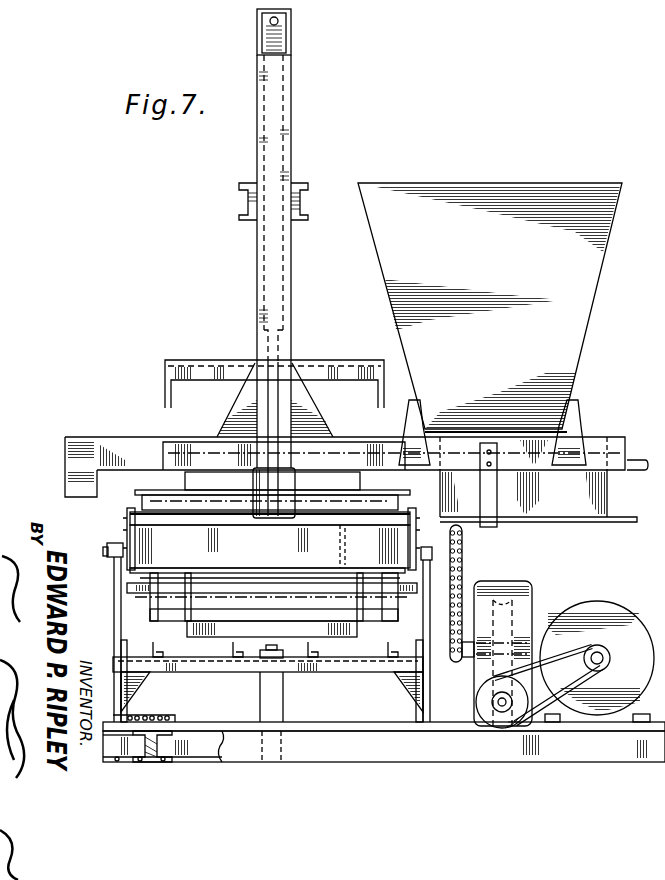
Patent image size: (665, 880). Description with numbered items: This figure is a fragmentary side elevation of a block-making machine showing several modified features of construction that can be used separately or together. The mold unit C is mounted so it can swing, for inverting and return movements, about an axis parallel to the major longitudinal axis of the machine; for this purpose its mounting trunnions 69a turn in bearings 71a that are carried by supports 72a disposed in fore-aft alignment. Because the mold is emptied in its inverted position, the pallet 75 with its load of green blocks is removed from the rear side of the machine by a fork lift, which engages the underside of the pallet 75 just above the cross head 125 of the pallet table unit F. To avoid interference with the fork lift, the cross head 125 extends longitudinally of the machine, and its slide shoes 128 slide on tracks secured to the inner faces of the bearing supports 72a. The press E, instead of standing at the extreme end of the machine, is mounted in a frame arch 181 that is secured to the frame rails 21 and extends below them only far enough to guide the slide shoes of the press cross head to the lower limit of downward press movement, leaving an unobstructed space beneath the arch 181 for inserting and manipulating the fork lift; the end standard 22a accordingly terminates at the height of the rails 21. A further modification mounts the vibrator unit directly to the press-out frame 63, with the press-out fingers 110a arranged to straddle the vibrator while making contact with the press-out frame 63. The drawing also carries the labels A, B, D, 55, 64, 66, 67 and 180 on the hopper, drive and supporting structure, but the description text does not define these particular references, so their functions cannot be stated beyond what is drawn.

The frame arch 181 is at (292, 306).
The press E is at (236, 344).
The press-out fingers 110a is at (171, 401).
The frame rails 21 is at (124, 446).
The end standard 22a is at (66, 480).
The hopper A is at (599, 182).
The feed block B is at (610, 500).
The pallet 75 is at (344, 517).
The mold unit C is at (270, 546).
The mold box top plate 67 is at (192, 527).
The mold box bottom strip 66 is at (226, 566).
The mold section 55 is at (364, 546).
The bearings 71a is at (124, 540).
The supports 72a is at (113, 572).
The pallet support D is at (201, 638).
The support rail 64 is at (152, 612).
The press-out frame 63 is at (328, 618).
The inner post 180 is at (119, 631).
The pallet table unit F is at (354, 674).
The cross head 125 is at (252, 662).
The slide shoes 128 is at (129, 706).
The mounting trunnions 69a is at (462, 557).